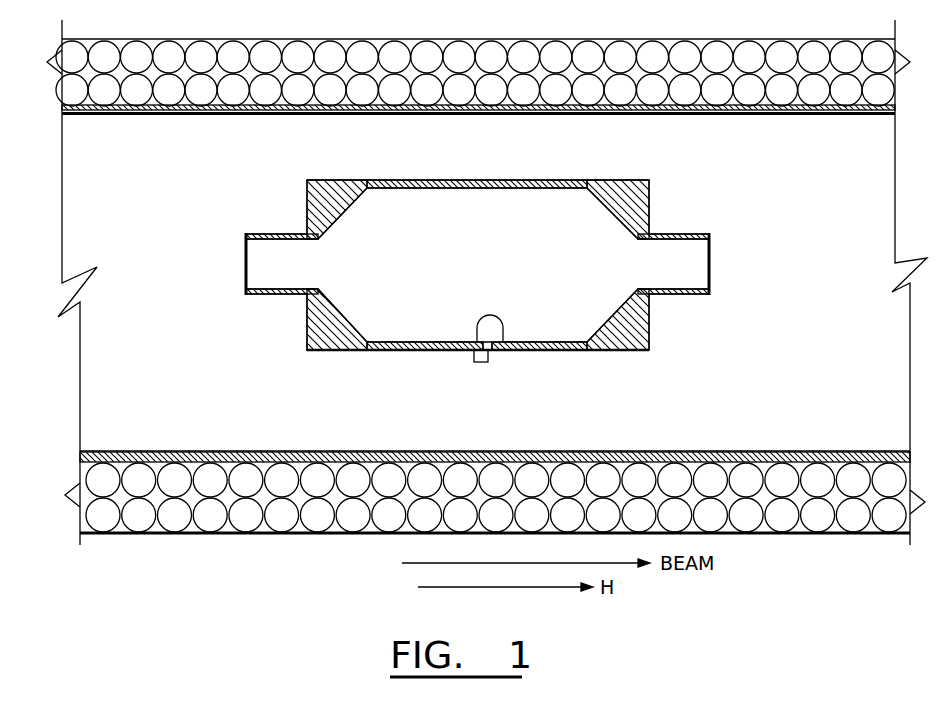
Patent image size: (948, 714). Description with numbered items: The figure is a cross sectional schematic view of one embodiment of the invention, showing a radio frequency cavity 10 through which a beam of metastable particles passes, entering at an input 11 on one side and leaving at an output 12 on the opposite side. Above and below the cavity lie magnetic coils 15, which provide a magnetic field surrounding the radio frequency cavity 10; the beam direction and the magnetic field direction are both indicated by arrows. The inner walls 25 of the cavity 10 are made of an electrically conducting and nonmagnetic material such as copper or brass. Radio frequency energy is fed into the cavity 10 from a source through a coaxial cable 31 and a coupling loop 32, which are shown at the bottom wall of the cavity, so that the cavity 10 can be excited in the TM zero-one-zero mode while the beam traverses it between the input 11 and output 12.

The radio frequency cavity 10 is at (383, 165).
The input 11 is at (246, 266).
The output 12 is at (711, 268).
The magnetic coils 15 is at (622, 40).
The inner walls 25 is at (553, 180).
The coaxial cable 31 is at (492, 353).
The coupling loop 32 is at (481, 362).